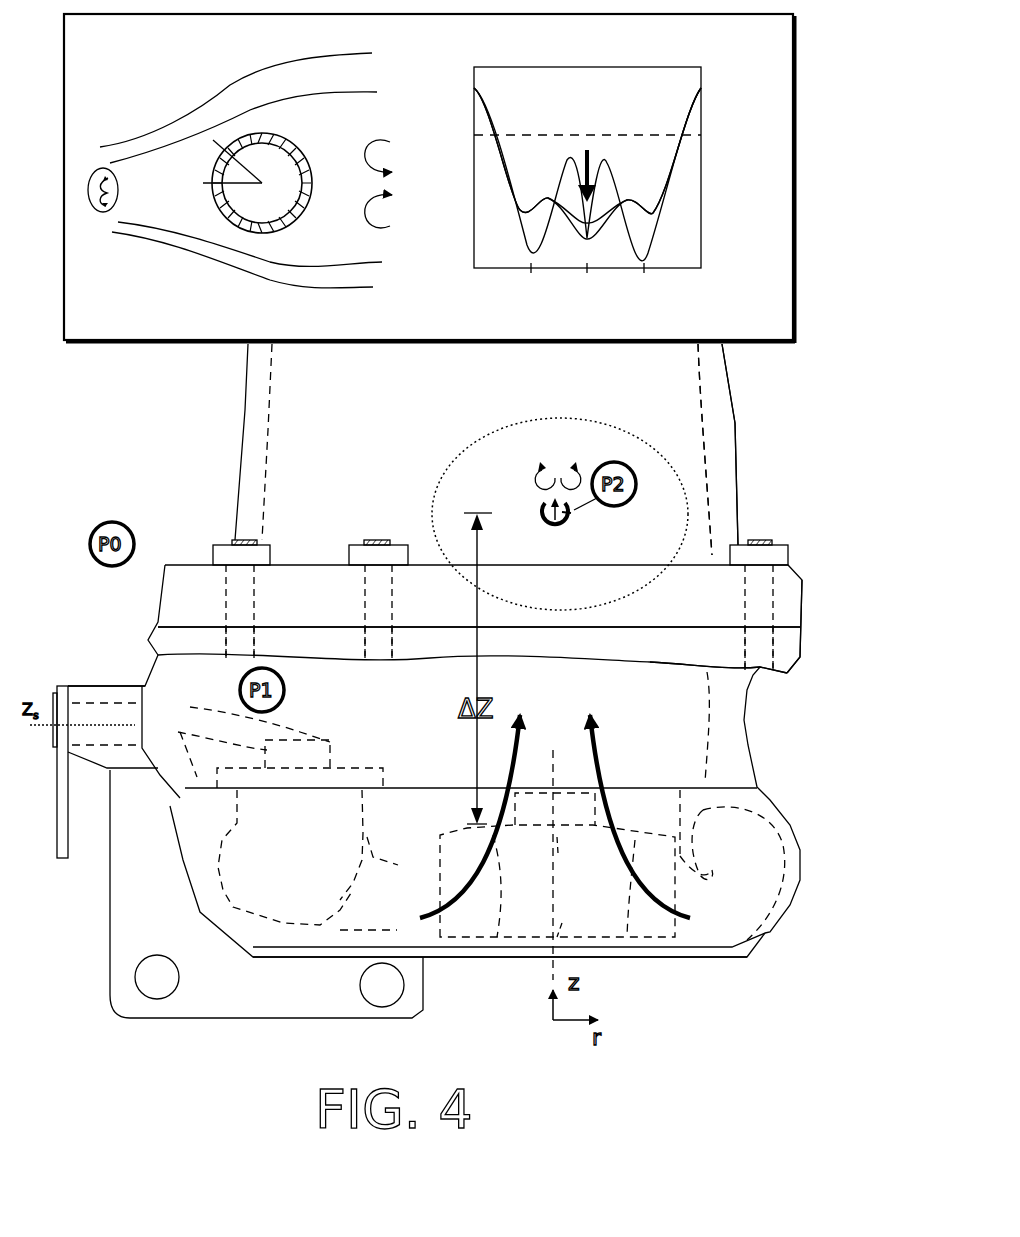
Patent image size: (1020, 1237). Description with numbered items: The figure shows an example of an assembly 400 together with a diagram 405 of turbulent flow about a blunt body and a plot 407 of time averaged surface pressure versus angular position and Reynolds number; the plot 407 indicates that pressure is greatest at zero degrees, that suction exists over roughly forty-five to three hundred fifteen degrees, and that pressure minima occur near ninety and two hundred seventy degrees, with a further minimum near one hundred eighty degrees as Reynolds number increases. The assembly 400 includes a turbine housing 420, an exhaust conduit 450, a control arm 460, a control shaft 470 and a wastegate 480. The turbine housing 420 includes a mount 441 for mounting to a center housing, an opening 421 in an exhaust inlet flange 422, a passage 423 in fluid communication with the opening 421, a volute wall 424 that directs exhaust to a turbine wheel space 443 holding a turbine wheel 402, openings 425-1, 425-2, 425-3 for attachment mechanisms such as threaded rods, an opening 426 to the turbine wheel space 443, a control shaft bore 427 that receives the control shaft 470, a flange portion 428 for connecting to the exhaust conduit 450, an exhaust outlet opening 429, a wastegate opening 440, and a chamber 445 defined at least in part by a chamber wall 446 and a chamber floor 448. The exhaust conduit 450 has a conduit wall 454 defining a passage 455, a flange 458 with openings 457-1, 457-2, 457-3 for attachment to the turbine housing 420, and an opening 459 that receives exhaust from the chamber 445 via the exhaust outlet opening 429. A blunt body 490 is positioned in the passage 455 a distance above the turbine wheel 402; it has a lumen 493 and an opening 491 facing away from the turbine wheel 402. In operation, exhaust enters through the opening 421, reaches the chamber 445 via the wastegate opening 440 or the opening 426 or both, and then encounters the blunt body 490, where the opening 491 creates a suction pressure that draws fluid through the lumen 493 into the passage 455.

The assembly 400 is at (155, 388).
The turbine wheel 402 is at (610, 915).
The diagram 405 is at (155, 62).
The plot 407 is at (515, 62).
The turbine housing 420 is at (748, 740).
The opening 421 is at (353, 882).
The exhaust inlet flange 422 is at (423, 980).
The passage 423 is at (278, 874).
The volute wall 424 is at (770, 803).
The opening 425-1 is at (745, 644).
The opening 425-2 is at (392, 638).
The opening 425-3 is at (256, 639).
The opening 426 is at (680, 788).
The control shaft bore 427 is at (118, 700).
The flange portion 428 is at (782, 670).
The exhaust outlet opening 429 is at (534, 630).
The wastegate opening 440 is at (392, 775).
The mount 441 is at (670, 958).
The turbine wheel space 443 is at (571, 888).
The chamber 445 is at (648, 681).
The chamber wall 446 is at (706, 694).
The chamber floor 448 is at (694, 788).
The exhaust conduit 450 is at (735, 423).
The conduit wall 454 is at (698, 370).
The passage 455 is at (434, 412).
The opening 457-1 is at (745, 590).
The opening 457-2 is at (392, 598).
The opening 457-3 is at (254, 600).
The flange 458 is at (722, 627).
The opening 459 is at (638, 628).
The control arm 460 is at (70, 872).
The control shaft 470 is at (100, 665).
The wastegate 480 is at (312, 713).
The blunt body 490 is at (553, 528).
The opening 491 is at (542, 503).
The lumen 493 is at (572, 513).